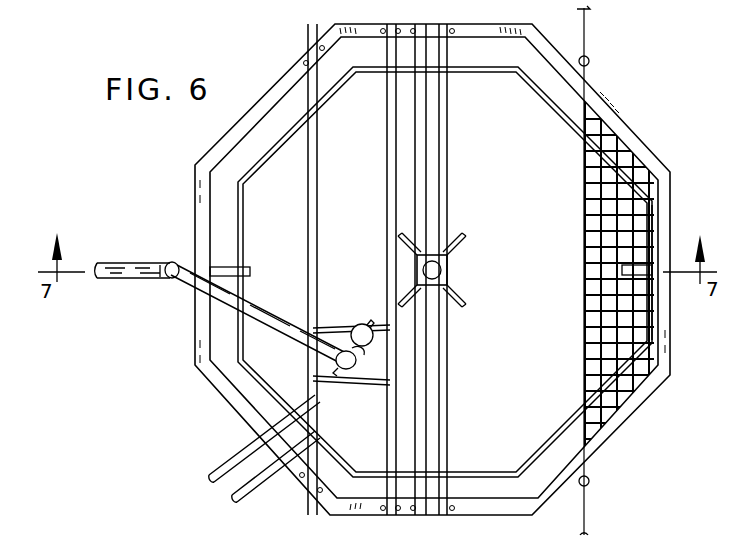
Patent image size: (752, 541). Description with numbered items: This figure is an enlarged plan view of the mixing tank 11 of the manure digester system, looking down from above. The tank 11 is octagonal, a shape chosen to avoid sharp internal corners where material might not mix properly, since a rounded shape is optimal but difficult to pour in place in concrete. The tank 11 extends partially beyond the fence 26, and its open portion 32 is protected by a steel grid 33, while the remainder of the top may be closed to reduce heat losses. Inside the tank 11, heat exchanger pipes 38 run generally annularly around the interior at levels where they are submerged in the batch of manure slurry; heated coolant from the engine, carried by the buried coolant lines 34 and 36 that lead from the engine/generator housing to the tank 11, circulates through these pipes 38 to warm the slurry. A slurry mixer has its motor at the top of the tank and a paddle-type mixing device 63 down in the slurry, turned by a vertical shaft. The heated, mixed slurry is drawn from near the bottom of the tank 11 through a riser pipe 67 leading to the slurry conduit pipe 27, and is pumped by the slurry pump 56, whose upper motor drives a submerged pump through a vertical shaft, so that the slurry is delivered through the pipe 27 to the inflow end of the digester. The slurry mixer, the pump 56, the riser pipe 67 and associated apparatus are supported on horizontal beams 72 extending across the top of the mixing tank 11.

The mixing tank 11 is at (616, 92).
The fence 26 is at (586, 507).
The pipe 27 is at (118, 262).
The open portion 32 is at (644, 160).
The steel grid 33 is at (652, 233).
The coolant line 34 is at (256, 478).
The coolant line 36 is at (231, 457).
The heat exchanger pipes 38 is at (549, 108).
The slurry pump 56 is at (362, 325).
The paddle-type mixing device 63 is at (465, 238).
The riser pipe 67 is at (343, 372).
The horizontal beams 72 is at (387, 155).